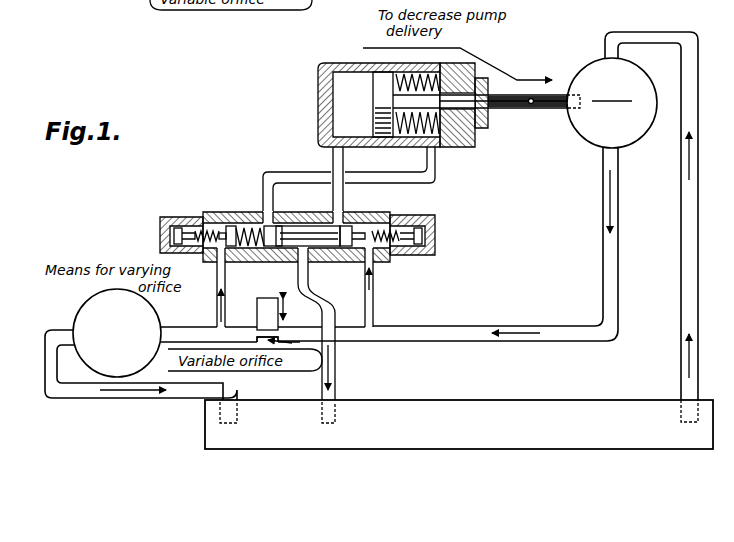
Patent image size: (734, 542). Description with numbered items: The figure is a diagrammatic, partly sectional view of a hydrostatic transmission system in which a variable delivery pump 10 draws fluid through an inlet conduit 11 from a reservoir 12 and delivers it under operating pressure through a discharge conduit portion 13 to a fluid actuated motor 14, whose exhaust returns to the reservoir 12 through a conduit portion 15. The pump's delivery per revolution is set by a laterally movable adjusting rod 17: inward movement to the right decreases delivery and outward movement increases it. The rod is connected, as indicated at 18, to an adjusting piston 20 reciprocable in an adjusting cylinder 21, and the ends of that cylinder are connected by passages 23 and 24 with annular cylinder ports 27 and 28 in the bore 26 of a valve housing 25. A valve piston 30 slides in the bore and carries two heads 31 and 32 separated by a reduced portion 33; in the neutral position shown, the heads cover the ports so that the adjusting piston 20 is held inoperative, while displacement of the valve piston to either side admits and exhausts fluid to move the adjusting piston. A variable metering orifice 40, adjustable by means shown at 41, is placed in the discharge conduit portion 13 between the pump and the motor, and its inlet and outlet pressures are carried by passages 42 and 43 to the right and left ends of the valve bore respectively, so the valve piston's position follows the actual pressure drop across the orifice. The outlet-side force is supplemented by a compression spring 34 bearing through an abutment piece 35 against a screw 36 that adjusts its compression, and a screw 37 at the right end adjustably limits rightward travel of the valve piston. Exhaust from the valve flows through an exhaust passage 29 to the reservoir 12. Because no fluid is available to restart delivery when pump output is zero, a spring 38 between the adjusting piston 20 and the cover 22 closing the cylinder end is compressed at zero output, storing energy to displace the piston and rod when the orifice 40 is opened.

The variable delivery pump 10 is at (590, 70).
The inlet conduit 11 is at (698, 70).
The reservoir 12 is at (603, 400).
The discharge conduit portion 13 is at (619, 290).
The fluid actuated motor 14 is at (88, 303).
The return conduit portion 15 is at (84, 400).
The adjusting rod 17 is at (554, 108).
The connection 18 is at (529, 105).
The adjusting piston 20 is at (377, 88).
The adjusting cylinder 21 is at (318, 74).
The cover 22 is at (477, 142).
The passage 23 is at (437, 163).
The passage 24 is at (333, 160).
The valve housing 25 is at (233, 228).
The valve bore 26 is at (377, 222).
The cylinder port 27 is at (262, 222).
The cylinder port 28 is at (348, 220).
The exhaust passage 29 is at (338, 360).
The valve piston 30 is at (333, 230).
The valve piston head 31 is at (252, 264).
The valve piston head 32 is at (343, 262).
The reduced portion 33 is at (283, 226).
The compression spring 34 is at (240, 212).
The abutment piece 35 is at (213, 236).
The screw 36 is at (176, 234).
The screw 37 is at (416, 222).
The spring 38 is at (414, 122).
The variable orifice 40 is at (282, 332).
The orifice adjusting means 41 is at (270, 300).
The passage 42 is at (375, 312).
The passage 43 is at (212, 312).